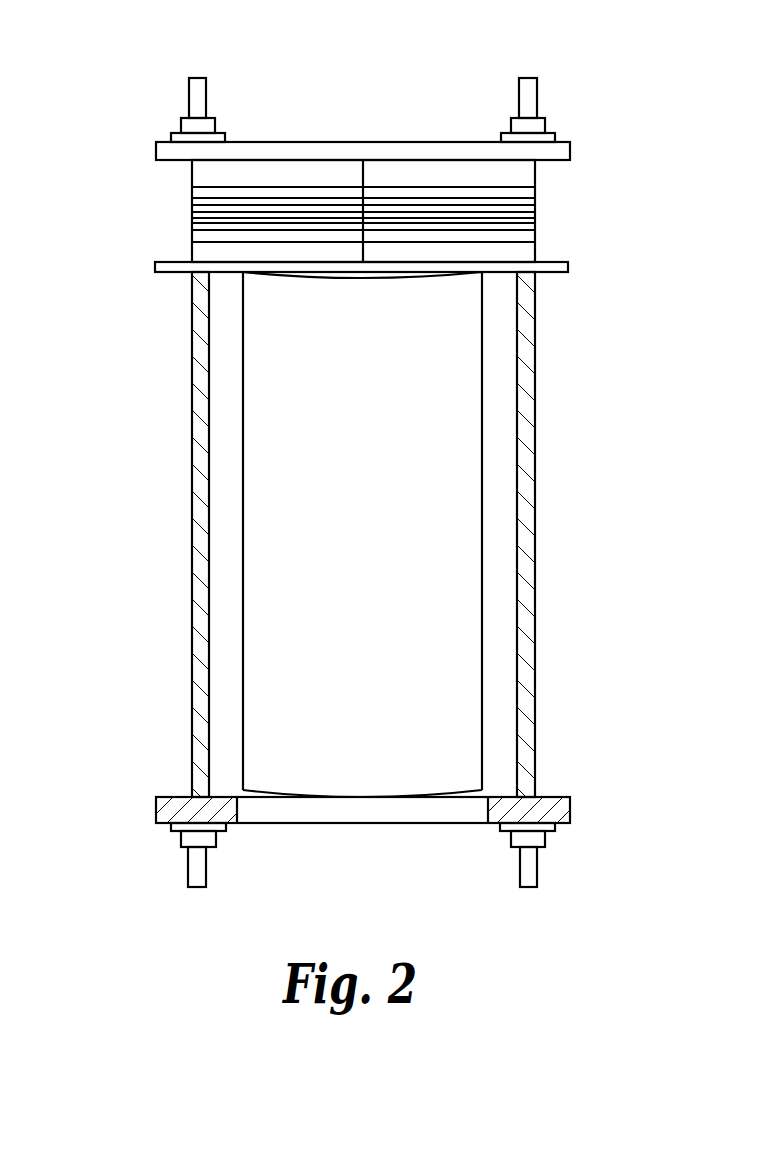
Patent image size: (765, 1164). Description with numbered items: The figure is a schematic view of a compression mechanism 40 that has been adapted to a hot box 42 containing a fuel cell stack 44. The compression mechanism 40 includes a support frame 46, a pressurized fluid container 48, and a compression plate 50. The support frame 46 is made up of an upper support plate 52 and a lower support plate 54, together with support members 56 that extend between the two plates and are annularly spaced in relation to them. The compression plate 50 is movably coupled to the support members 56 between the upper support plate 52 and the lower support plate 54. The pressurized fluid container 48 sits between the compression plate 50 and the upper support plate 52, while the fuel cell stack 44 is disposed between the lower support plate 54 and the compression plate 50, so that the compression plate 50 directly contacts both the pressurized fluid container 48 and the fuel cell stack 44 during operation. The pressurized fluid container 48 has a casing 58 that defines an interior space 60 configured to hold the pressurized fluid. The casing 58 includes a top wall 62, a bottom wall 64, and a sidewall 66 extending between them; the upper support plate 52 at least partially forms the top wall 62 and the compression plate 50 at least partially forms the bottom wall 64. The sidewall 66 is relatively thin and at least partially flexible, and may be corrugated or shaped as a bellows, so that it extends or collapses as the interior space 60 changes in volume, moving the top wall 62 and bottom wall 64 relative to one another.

The compression mechanism 40 is at (112, 60).
The hot box 42 is at (135, 607).
The fuel cell stack 44 is at (252, 418).
The support frame 46 is at (192, 343).
The pressurized fluid container 48 is at (518, 253).
The compression plate 50 is at (152, 264).
The upper support plate 52 is at (443, 150).
The lower support plate 54 is at (563, 811).
The support members 56 is at (525, 372).
The casing 58 is at (535, 177).
The interior space 60 is at (197, 175).
The top wall 62 is at (278, 152).
The bottom wall 64 is at (213, 262).
The sidewall 66 is at (535, 210).